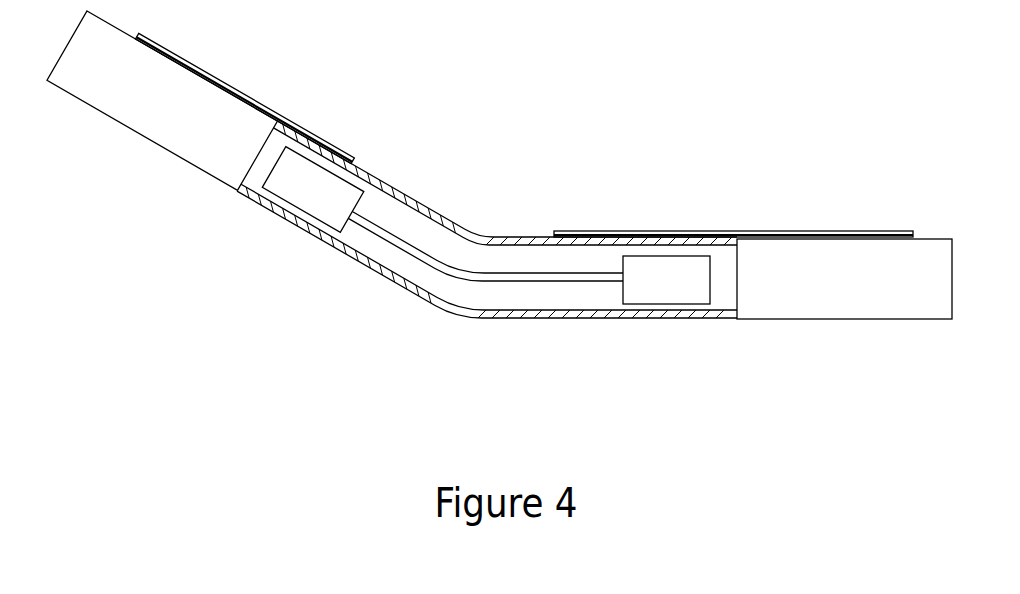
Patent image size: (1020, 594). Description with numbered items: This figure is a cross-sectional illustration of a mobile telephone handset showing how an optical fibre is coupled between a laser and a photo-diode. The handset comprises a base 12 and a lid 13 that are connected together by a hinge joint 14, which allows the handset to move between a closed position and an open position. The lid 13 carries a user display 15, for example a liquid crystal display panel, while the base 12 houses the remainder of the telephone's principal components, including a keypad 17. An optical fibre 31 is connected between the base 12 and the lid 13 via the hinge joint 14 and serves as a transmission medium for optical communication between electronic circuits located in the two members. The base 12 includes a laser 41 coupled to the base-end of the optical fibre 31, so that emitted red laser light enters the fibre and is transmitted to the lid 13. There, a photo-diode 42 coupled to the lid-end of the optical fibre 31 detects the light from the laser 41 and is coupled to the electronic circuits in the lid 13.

The base 12 is at (844, 279).
The lid 13 is at (162, 100).
The hinge joint 14 is at (487, 219).
The user display 15 is at (272, 80).
The keypad 17 is at (729, 209).
The optical fibre 31 is at (415, 227).
The laser 41 is at (666, 280).
The photo-diode 42 is at (313, 190).